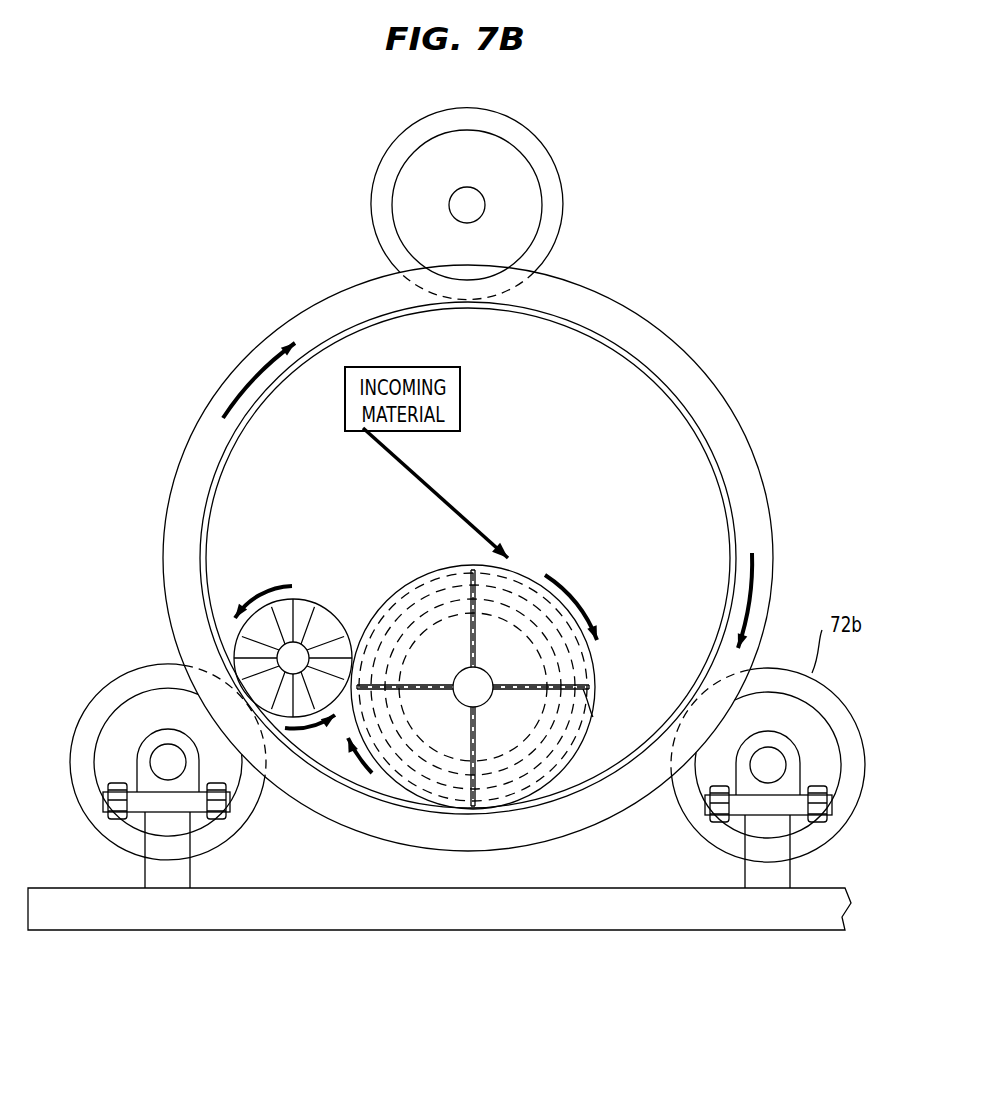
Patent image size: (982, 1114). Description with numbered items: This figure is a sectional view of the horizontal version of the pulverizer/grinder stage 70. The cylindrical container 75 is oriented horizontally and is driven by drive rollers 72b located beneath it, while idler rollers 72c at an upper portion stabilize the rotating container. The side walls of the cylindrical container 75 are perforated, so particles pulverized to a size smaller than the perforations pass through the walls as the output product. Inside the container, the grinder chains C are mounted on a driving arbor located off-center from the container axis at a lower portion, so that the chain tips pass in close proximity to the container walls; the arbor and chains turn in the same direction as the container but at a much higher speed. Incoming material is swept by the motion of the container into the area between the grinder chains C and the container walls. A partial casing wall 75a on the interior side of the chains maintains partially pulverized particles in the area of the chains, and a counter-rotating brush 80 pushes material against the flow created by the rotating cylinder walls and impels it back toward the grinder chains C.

The pulverizer/grinder stage 70 is at (468, 558).
The drive rollers 72b is at (120, 677).
The idler rollers 72c is at (372, 190).
The cylindrical container 75 is at (682, 417).
The partial casing wall 75a is at (593, 677).
The counter-rotating brush 80 is at (300, 646).
The grinder chains c is at (593, 717).